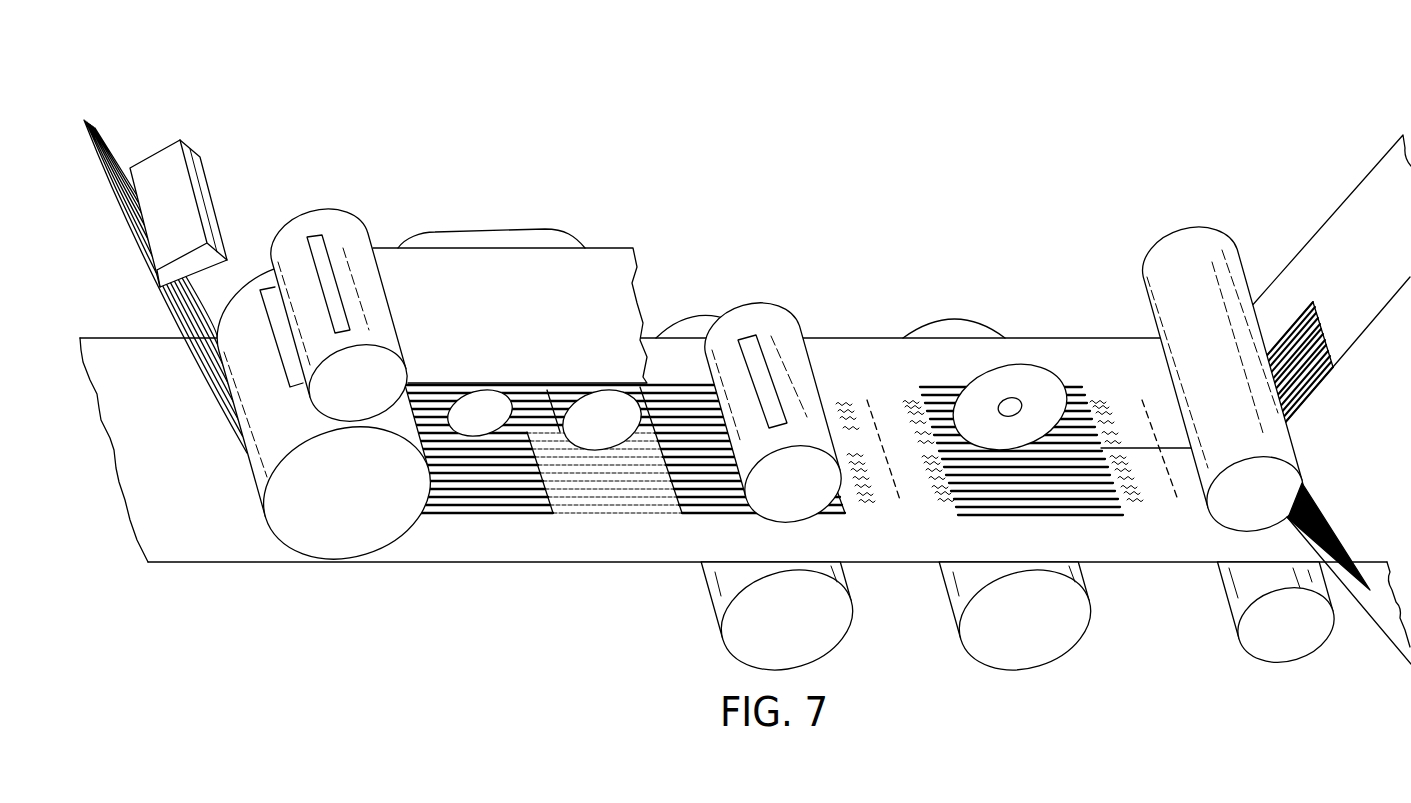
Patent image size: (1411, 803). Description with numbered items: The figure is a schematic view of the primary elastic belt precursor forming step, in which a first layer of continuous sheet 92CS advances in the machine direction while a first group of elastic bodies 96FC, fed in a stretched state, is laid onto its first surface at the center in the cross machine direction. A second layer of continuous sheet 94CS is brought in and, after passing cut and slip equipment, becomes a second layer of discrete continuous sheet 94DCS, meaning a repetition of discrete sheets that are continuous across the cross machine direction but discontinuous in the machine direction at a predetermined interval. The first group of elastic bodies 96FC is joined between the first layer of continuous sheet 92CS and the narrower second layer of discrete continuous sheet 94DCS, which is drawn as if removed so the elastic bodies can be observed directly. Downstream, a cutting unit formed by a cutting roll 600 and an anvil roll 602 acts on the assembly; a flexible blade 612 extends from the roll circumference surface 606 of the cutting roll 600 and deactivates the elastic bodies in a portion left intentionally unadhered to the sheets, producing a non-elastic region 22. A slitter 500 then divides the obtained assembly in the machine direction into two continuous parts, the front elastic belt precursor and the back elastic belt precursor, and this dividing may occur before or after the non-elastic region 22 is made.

The first group of elastic bodies 96FC is at (83, 115).
The first layer of continuous sheet 92CS is at (216, 551).
The second layer of continuous sheet 94CS is at (612, 258).
The second layer of discrete continuous sheet 94DCS is at (498, 510).
The cutting roll 600 is at (774, 374).
The flexible blade 612 is at (748, 344).
The roll circumference surface 606 is at (778, 322).
The non-elastic region 22 is at (892, 417).
The slitter 500 is at (1027, 385).
The anvil roll 602 is at (712, 602).